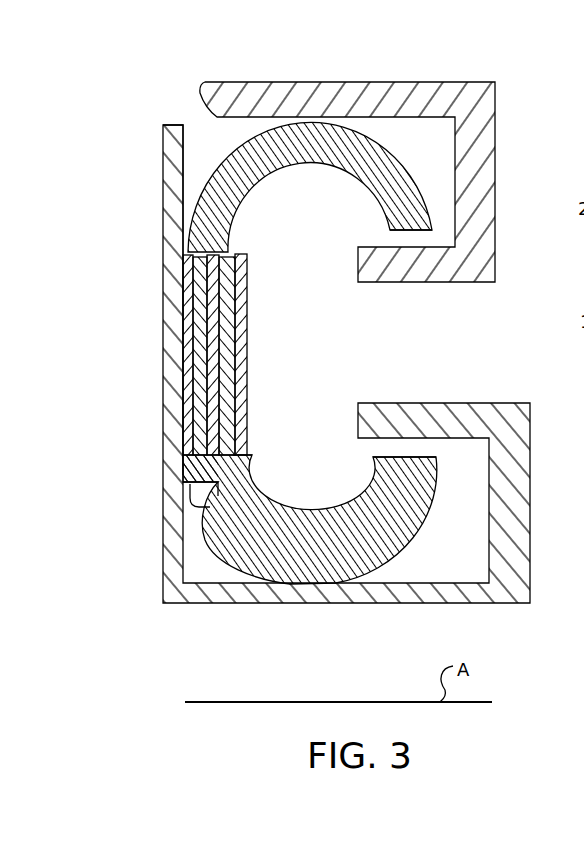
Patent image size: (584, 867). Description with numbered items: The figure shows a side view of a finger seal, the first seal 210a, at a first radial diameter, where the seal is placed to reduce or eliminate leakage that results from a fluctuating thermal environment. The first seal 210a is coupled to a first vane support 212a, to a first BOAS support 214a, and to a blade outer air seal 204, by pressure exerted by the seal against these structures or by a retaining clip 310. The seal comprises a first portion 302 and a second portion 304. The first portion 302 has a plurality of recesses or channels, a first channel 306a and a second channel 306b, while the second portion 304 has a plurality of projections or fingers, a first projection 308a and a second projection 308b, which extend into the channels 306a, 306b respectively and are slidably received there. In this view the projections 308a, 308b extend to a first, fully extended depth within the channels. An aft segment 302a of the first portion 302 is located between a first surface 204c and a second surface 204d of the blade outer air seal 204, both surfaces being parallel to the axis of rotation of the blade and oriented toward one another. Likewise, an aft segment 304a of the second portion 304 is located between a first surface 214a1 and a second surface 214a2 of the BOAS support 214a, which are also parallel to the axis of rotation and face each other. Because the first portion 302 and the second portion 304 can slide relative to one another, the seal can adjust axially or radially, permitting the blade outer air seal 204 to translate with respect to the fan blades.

The first seal 210a is at (139, 115).
The first vane support 212a is at (166, 172).
The first BOAS support 214a is at (420, 82).
The first surface of the blade outer air seal support 214a1 is at (462, 143).
The second surface of the blade outer air seal support 214a2 is at (443, 250).
The second portion 304 is at (315, 163).
The aft segment of the second portion 304a is at (392, 200).
The first projection 308a is at (247, 360).
The second projection 308b is at (190, 347).
The first portion 302 is at (415, 538).
The aft segment of the first portion 302a is at (412, 468).
The first channel 306a is at (250, 478).
The second channel 306b is at (183, 474).
The retaining clip 310 is at (192, 510).
The blade outer air seal 204 is at (232, 604).
The first surface of the blade outer air seal 204c is at (475, 440).
The second surface of the blade outer air seal 204d is at (470, 582).